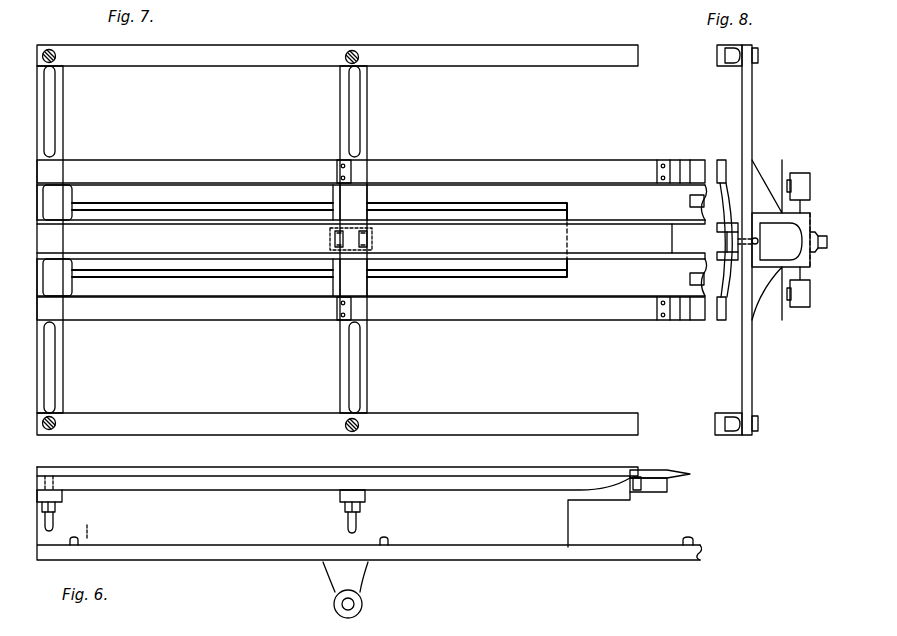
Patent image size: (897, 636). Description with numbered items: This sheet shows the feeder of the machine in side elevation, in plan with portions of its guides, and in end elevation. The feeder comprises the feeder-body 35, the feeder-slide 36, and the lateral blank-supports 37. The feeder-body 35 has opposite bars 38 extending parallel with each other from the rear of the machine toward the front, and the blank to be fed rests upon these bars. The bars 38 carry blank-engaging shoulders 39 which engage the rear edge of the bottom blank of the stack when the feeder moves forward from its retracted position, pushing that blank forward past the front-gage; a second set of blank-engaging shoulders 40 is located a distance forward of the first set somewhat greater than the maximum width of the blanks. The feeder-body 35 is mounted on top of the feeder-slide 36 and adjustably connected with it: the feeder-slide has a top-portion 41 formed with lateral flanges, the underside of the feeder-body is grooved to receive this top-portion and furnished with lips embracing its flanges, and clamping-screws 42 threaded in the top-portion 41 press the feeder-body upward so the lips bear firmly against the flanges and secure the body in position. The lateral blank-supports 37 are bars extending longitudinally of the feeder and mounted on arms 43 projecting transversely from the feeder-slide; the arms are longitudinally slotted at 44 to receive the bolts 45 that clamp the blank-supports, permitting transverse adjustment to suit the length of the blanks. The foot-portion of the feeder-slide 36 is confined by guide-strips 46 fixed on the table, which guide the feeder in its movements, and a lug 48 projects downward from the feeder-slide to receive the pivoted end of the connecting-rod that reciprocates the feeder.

In FIG. 7, the feeder-body 35 is at (354, 238).
In FIG. 7, the feeder-slide 36 is at (497, 214).
In FIG. 8, the feeder-slide 36 is at (766, 210).
In FIG. 6, the feeder-slide 36 is at (570, 527).
In FIG. 7, the lateral blank-support 37 is at (268, 66).
In FIG. 8, the lateral blank-support 37 is at (716, 58).
In FIG. 6, the lateral blank-support 37 is at (175, 466).
In FIG. 7, the bar 38 is at (181, 159).
In FIG. 8, the bar 38 is at (727, 136).
In FIG. 6, the bar 38 is at (690, 480).
In FIG. 7, the blank-engaging shoulder 39 is at (351, 172).
In FIG. 7, the second blank-engaging shoulder 40 is at (672, 160).
In FIG. 8, the second blank-engaging shoulder 40 is at (697, 240).
In FIG. 6, the second blank-engaging shoulder 40 is at (668, 470).
In FIG. 8, the top-portion 41 is at (727, 238).
In FIG. 8, the clamping-screw 42 is at (758, 242).
In FIG. 7, the arm 43 is at (64, 115).
In FIG. 8, the arm 43 is at (753, 92).
In FIG. 6, the arm 43 is at (66, 498).
In FIG. 7, the slot 44 is at (50, 96).
In FIG. 7, the bolt 45 is at (46, 52).
In FIG. 6, the bolt 45 is at (360, 508).
In FIG. 7, the guide-strip 46 is at (702, 202).
In FIG. 8, the guide-strip 46 is at (805, 173).
In FIG. 6, the lug 48 is at (364, 590).